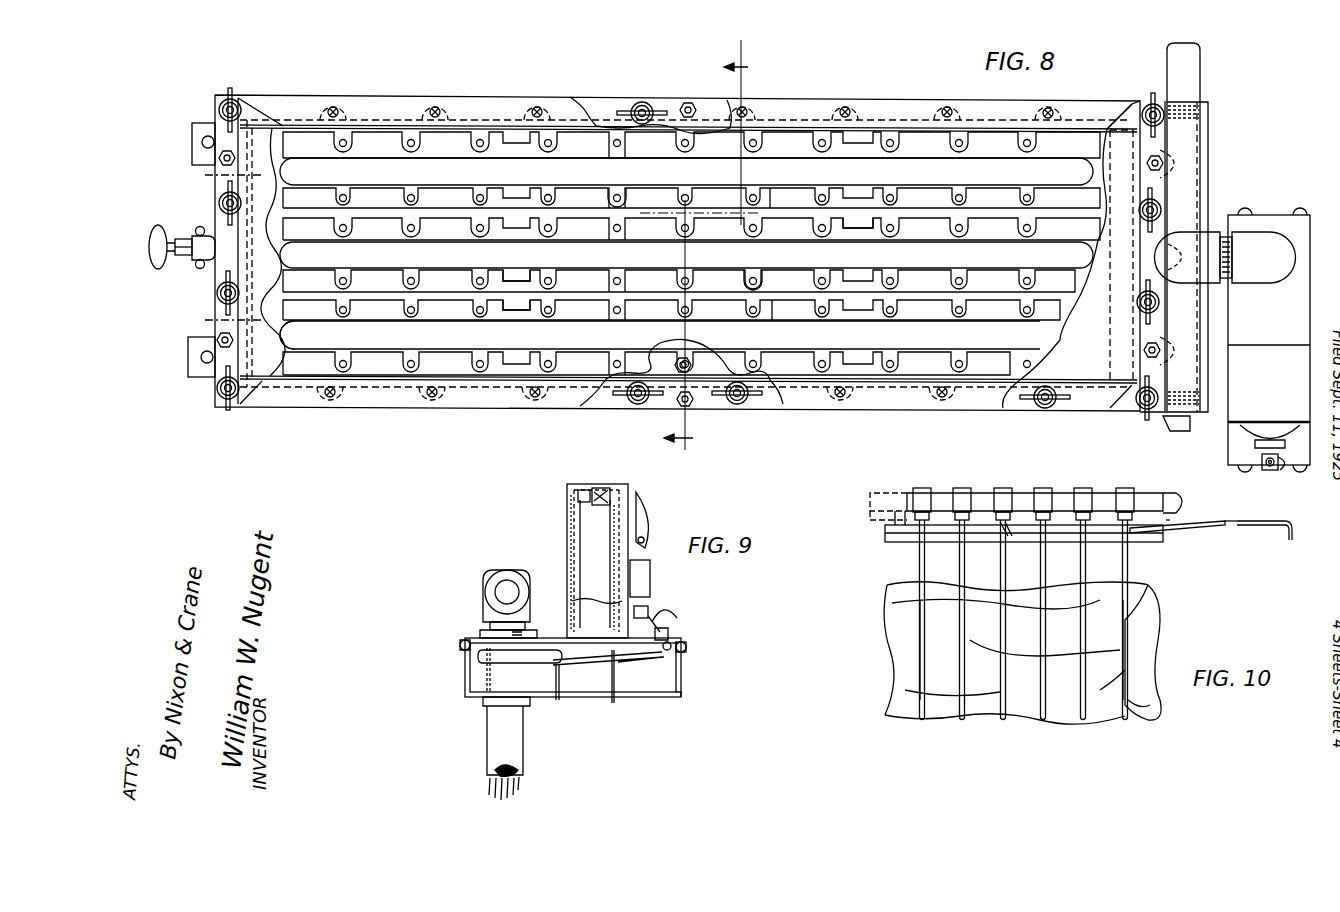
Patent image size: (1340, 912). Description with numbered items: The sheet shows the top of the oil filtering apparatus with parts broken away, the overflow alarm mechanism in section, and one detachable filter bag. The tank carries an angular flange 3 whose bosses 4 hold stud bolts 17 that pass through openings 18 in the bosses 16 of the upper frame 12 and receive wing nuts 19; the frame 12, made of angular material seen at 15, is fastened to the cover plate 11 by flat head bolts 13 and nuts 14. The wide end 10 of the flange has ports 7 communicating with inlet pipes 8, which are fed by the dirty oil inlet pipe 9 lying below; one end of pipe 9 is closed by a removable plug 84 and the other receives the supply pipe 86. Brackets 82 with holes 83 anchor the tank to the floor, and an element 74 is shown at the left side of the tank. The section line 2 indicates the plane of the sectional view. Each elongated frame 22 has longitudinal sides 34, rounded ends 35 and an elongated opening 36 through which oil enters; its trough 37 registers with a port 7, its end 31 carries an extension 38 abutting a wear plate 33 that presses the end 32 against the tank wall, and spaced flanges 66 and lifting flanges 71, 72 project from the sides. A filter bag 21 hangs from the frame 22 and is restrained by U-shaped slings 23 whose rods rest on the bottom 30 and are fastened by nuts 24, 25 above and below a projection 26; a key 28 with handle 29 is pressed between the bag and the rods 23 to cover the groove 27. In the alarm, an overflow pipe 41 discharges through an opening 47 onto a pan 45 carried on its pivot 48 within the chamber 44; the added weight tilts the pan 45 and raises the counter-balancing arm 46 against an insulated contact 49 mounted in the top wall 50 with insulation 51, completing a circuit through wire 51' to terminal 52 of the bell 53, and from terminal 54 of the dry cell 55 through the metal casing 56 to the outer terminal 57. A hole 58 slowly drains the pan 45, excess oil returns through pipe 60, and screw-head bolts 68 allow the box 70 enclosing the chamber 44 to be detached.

In FIG. 8, the section line 2- 2 is at (704, 245).
In FIG. 8, the flange 3 is at (1175, 130).
In FIG. 8, the bosses 4 is at (1045, 108).
In FIG. 8, the ports 7 is at (686, 253).
In FIG. 8, the pipes 8 is at (1165, 165).
In FIG. 8, the dirty oil inlet pipe 9 is at (1192, 185).
In FIG. 8, the end of rectangular frame 10 is at (1185, 114).
In FIG. 8, the rectangular metal plate 11 is at (264, 302).
In FIG. 8, the rectangular frame 12 is at (1122, 104).
In FIG. 8, the flat head bolts 13 is at (690, 103).
In FIG. 8, the nuts 14 is at (685, 103).
In FIG. 8, the angular material 15 is at (598, 122).
In FIG. 8, the bosses 16 is at (640, 106).
In FIG. 8, the stud bolts 17 is at (644, 126).
In FIG. 8, the openings 18 is at (535, 398).
In FIG. 8, the thumb or wing nuts 19 is at (647, 108).
In FIG. 10, the filtering bags 21 is at (1148, 596).
In FIG. 8, the elongated open frames 22 is at (287, 234).
In FIG. 10, the elongated open frames 22 is at (1104, 500).
In FIG. 8, the U-shaped metal loops or slings 23 is at (680, 230).
In FIG. 10, the U-shaped metal loops or slings 23 is at (920, 570).
In FIG. 8, the nut 24 is at (691, 348).
In FIG. 10, the nut 24 is at (964, 494).
In FIG. 10, the nut 25 is at (1042, 524).
In FIG. 8, the projection 26 is at (615, 202).
In FIG. 10, the projection 26 is at (1044, 496).
In FIG. 10, the endless groove 27 is at (912, 530).
In FIG. 10, the key 28 is at (1200, 526).
In FIG. 10, the handle 29 is at (1289, 532).
In FIG. 8, the bottom 30 is at (386, 366).
In FIG. 8, the end of frame 31 is at (283, 330).
In FIG. 10, the end of frame 31 is at (1155, 500).
In FIG. 8, the end of frame 32 is at (1135, 322).
In FIG. 10, the end of frame 32 is at (868, 502).
In FIG. 8, the wear plate 33 is at (248, 126).
In FIG. 8, the longitudinal sides 34 is at (772, 190).
In FIG. 10, the rounded ends 35 is at (885, 522).
In FIG. 8, the elongated opening 36 is at (922, 166).
In FIG. 8, the trough 37 is at (1100, 182).
In FIG. 10, the trough 37 is at (890, 500).
In FIG. 8, the extension or bracket 38 is at (224, 248).
In FIG. 10, the extension or bracket 38 is at (1180, 500).
In FIG. 8, the over-flow pipe 41 is at (1205, 228).
In FIG. 9, the over-flow pipe 41 is at (510, 578).
In FIG. 9, the chamber 44 is at (682, 680).
In FIG. 9, the pan 45 is at (478, 657).
In FIG. 9, the counter-balancing arm 46 is at (613, 703).
In FIG. 9, the opening 47 is at (530, 640).
In FIG. 9, the pivot 48 is at (558, 700).
In FIG. 8, the insulated electric contact 49 is at (1268, 222).
In FIG. 9, the insulated electric contact 49 is at (672, 644).
In FIG. 9, the top wall 50 is at (600, 640).
In FIG. 8, the insulation 51 is at (1265, 474).
In FIG. 9, the insulation 51 is at (673, 621).
In FIG. 8, the wire 51' is at (1291, 476).
In FIG. 9, the wire 51' is at (676, 603).
In FIG. 9, the terminal 52 is at (650, 608).
In FIG. 8, the electric bell mechanism 53 is at (1242, 442).
In FIG. 9, the electric bell mechanism 53 is at (648, 566).
In FIG. 9, the terminal 54 is at (610, 488).
In FIG. 9, the dry cell 55 is at (592, 522).
In FIG. 8, the metal casing 56 is at (1240, 414).
In FIG. 9, the metal casing 56 is at (567, 572).
In FIG. 9, the outer terminal 57 is at (584, 490).
In FIG. 9, the restricted opening or hole 58 is at (486, 668).
In FIG. 9, the pipe 60 is at (496, 731).
In FIG. 8, the spaced flanges 66 is at (418, 306).
In FIG. 8, the screw-head bolts 68 is at (1298, 218).
In FIG. 9, the screw-head bolts 68 is at (460, 645).
In FIG. 10, the screw-head bolts 68 is at (1200, 500).
In FIG. 9, the box 70 is at (678, 698).
In FIG. 8, the flanges 71 is at (514, 150).
In FIG. 8, the flanges 72 is at (862, 229).
In FIG. 8, the valve 74 is at (203, 231).
In FIG. 8, the brackets 82 is at (192, 156).
In FIG. 8, the holes 83 is at (202, 142).
In FIG. 8, the plug 84 is at (1168, 425).
In FIG. 8, the dirty oil supply pipe 86 is at (1195, 70).